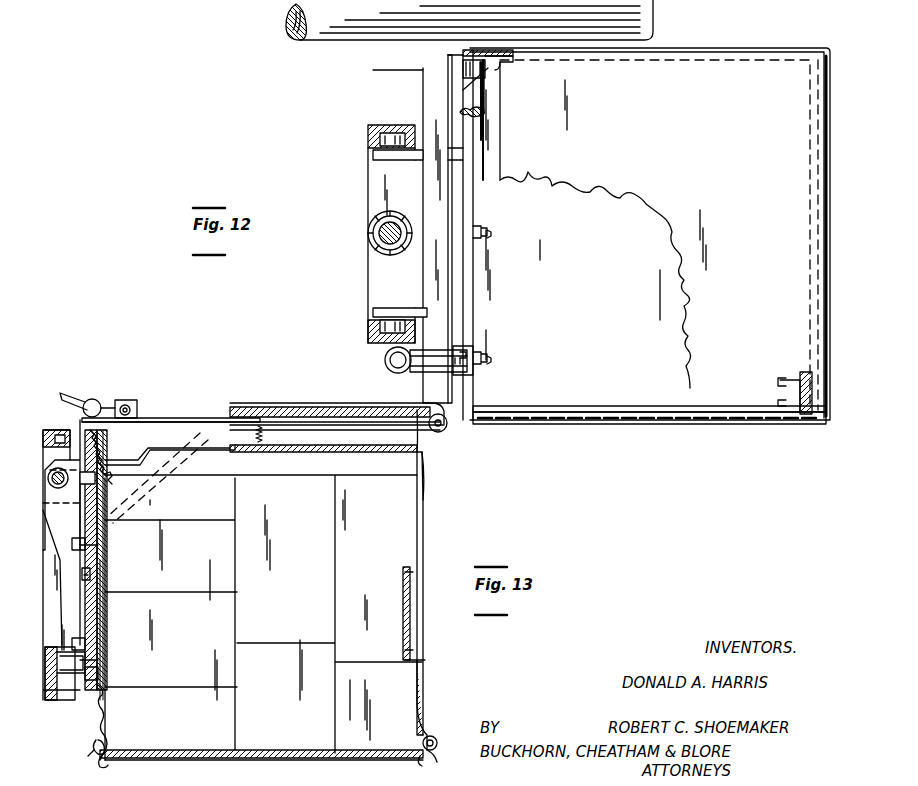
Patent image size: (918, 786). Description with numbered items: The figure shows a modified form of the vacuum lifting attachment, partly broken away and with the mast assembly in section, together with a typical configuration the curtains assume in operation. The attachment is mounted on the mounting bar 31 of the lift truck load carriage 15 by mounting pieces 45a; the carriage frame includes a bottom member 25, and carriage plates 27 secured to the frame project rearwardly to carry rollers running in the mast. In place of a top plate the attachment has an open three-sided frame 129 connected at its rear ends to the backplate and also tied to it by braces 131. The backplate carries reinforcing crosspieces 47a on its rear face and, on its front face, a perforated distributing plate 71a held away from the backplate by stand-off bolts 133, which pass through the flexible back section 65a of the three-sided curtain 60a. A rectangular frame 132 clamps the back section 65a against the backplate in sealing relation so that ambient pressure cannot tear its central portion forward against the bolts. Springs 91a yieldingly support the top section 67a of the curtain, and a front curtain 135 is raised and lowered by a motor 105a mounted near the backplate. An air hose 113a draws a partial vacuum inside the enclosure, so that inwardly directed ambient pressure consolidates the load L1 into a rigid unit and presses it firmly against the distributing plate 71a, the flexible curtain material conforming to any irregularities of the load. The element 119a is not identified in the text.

In FIG. 12, the load carriage 15 is at (435, 190).
In FIG. 13, the load carriage 15 is at (47, 430).
In FIG. 13, the bottom member 25 is at (52, 700).
In FIG. 12, the carriage plates 27 is at (373, 155).
In FIG. 13, the mounting bar 31 is at (62, 478).
In FIG. 13, the mounting pieces 45a is at (105, 608).
In FIG. 13, the reinforcing crosspieces 47a is at (100, 548).
In FIG. 13, the three-sided curtain 60a is at (425, 540).
In FIG. 12, the flexible back section 65a is at (440, 20).
In FIG. 13, the flexible back section 65a is at (105, 700).
In FIG. 12, the top section 67a is at (570, 420).
In FIG. 13, the top section 67a is at (330, 452).
In FIG. 13, the perforated distributing plate 71a is at (108, 655).
In FIG. 12, the springs 91a is at (484, 230).
In FIG. 13, the springs 91a is at (114, 466).
In FIG. 12, the motor 105a is at (487, 70).
In FIG. 13, the motor 105a is at (95, 405).
In FIG. 12, the air hose 113a is at (410, 372).
In FIG. 13, the air hose 113a is at (108, 572).
In FIG. 13, the bottom wall 119a is at (272, 750).
In FIG. 12, the open three-sided frame 129 is at (647, 412).
In FIG. 13, the open three-sided frame 129 is at (300, 412).
In FIG. 13, the braces 131 is at (190, 440).
In FIG. 13, the rectangular frame 132 is at (96, 700).
In FIG. 13, the stand-off bolts 133 is at (104, 632).
In FIG. 12, the front curtain 135 is at (738, 78).
In FIG. 13, the front curtain 135 is at (222, 418).
In FIG. 13, the load L1 is at (392, 622).